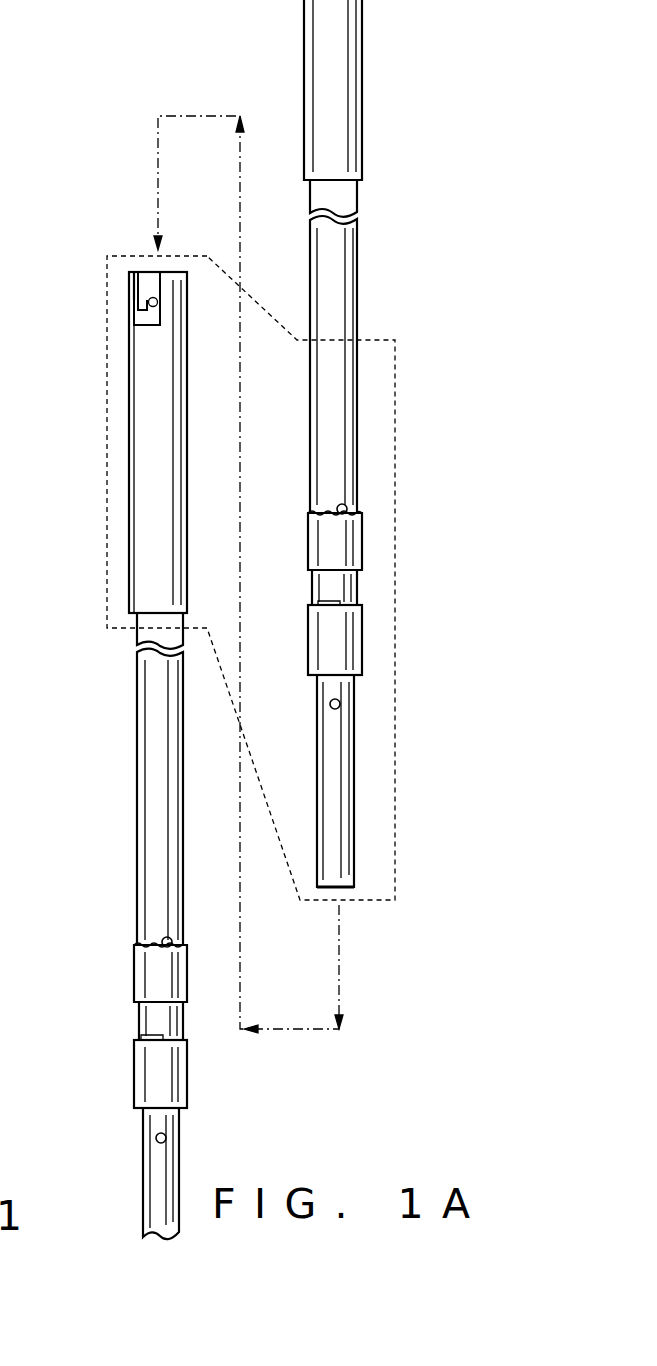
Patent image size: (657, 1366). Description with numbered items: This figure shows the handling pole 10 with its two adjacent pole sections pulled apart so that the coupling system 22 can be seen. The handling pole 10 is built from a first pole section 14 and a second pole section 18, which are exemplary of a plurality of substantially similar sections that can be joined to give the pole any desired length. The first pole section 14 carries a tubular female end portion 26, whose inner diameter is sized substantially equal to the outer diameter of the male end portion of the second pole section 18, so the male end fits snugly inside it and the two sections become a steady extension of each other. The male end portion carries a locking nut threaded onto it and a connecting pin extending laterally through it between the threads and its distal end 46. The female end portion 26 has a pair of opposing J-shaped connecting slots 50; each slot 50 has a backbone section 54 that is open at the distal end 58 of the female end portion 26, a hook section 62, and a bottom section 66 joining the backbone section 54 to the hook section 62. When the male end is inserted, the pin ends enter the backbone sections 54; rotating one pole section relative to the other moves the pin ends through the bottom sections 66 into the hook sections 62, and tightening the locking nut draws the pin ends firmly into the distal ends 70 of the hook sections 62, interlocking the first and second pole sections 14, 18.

The handling pole 10 is at (192, 70).
The first pole section 14 is at (80, 561).
The second pole section 18 is at (412, 390).
The coupling system 22 is at (106, 380).
The tubular female end portion 26 is at (145, 472).
The distal end 46 is at (350, 882).
The J-shaped connecting slot 50 is at (120, 297).
The backbone section 54 is at (132, 284).
The distal end 58 is at (150, 282).
The hook section 62 is at (162, 317).
The bottom section 66 is at (160, 324).
The distal end 70 is at (158, 298).